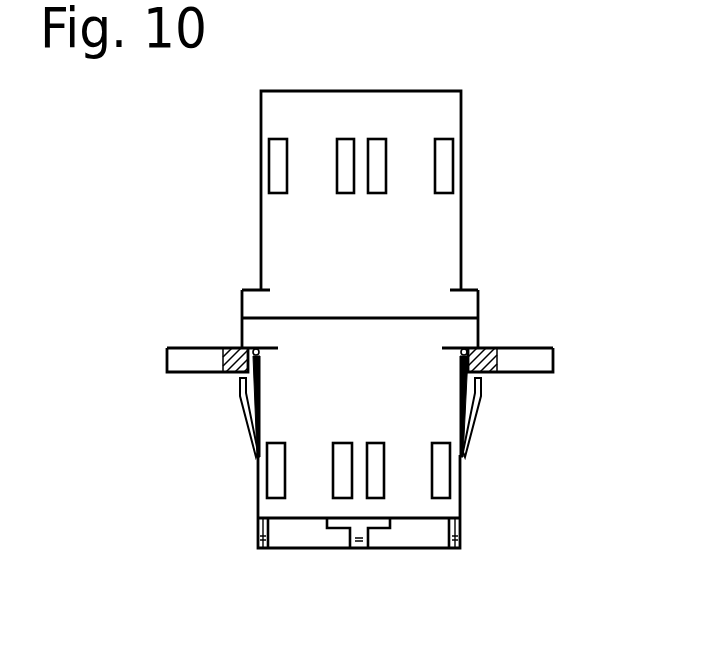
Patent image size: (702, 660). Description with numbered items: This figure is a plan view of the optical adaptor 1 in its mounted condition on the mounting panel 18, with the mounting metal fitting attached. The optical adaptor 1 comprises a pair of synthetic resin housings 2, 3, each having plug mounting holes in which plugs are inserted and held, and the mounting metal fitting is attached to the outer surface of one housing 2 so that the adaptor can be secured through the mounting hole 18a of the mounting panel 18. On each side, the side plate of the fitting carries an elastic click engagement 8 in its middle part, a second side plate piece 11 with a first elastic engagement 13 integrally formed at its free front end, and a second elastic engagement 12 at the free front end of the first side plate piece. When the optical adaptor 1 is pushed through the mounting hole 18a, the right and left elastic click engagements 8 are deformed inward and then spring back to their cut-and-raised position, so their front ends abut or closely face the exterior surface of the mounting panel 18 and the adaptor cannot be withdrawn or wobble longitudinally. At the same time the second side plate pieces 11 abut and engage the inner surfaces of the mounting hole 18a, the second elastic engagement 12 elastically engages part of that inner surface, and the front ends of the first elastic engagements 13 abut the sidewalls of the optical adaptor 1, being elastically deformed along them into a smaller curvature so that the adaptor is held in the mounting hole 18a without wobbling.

The optical adaptor 1 is at (556, 209).
The housing 2 is at (462, 507).
The housing 3 is at (462, 226).
The elastic click engagement 8 is at (478, 414).
The second side plate piece 11 is at (480, 388).
The second elastic engagement 12 is at (460, 383).
The first elastic engagement 13 is at (460, 357).
The mounting panel 18 is at (557, 358).
The mounting hole 18a is at (466, 345).